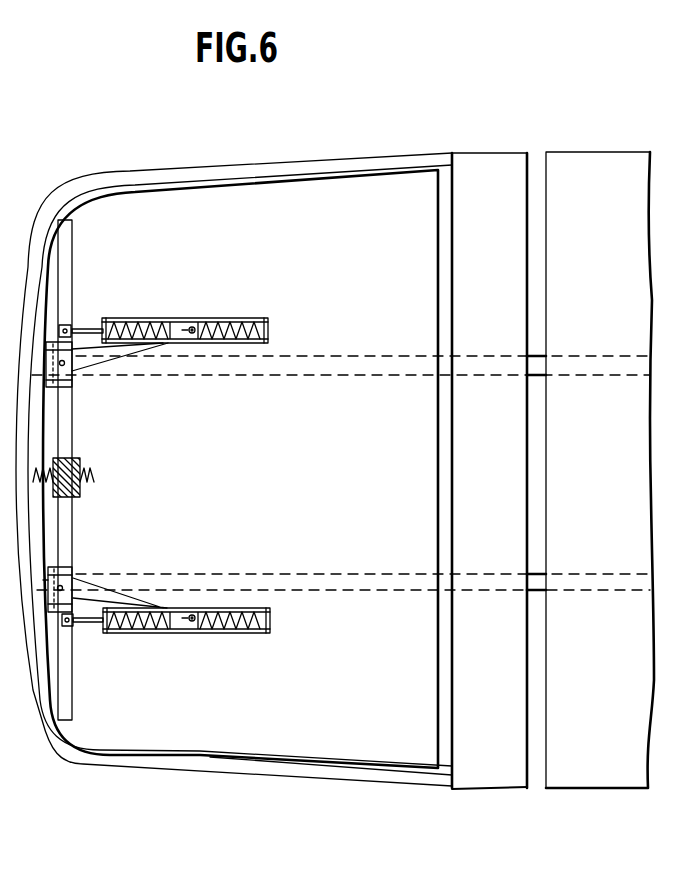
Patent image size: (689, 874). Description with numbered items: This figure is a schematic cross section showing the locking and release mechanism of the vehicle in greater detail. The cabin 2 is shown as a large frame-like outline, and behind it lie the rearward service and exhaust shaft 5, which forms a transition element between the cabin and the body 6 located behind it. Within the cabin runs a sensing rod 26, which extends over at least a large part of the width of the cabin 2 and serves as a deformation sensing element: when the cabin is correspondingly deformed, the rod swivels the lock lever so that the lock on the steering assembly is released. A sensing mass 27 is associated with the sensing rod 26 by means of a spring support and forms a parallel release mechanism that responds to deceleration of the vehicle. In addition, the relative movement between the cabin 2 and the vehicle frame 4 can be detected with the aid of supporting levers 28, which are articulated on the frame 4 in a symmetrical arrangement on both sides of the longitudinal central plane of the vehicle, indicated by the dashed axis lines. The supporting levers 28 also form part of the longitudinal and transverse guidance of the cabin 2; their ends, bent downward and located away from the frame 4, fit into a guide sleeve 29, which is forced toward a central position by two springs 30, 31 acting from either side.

The cabin 2 is at (330, 193).
The vehicle frame 4 is at (600, 350).
The service and exhaust shaft 5 is at (478, 176).
The body 6 is at (610, 765).
The sensing rod 26 is at (70, 540).
The sensing mass 27 is at (73, 460).
The supporting lever 28 is at (120, 350).
The guide sleeve 29 is at (238, 606).
The spring 30 is at (134, 318).
The spring 31 is at (225, 318).